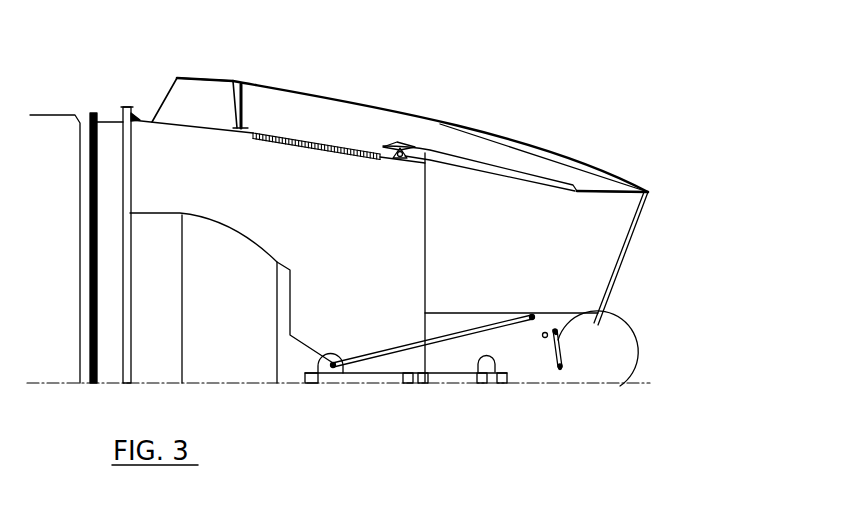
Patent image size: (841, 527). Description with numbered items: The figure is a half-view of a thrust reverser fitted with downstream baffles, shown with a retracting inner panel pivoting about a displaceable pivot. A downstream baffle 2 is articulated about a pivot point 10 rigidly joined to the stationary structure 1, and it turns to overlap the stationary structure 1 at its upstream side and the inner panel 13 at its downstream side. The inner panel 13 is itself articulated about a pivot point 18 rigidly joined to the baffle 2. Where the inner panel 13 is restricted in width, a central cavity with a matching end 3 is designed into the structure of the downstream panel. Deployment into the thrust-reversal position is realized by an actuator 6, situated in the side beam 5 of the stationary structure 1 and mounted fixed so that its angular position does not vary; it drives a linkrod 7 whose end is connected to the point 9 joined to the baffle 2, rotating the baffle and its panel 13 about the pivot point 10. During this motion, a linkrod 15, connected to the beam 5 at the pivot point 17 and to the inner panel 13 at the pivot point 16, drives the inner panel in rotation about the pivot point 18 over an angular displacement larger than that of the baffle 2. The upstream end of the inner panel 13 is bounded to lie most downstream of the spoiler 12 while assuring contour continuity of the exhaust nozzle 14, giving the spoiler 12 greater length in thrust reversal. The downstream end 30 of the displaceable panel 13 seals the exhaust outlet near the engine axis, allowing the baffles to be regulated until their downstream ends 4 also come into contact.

The stationary structure 1 is at (202, 92).
The downstream baffle 2 is at (513, 144).
The matching end 3 is at (322, 100).
The downstream end 4 is at (639, 231).
The side beam 5 is at (611, 369).
The actuator 6 is at (370, 372).
The linkrod 7 is at (453, 337).
The point 9 is at (532, 320).
The pivot point 10 is at (560, 368).
The spoiler 12 is at (244, 107).
The inner panel 13 is at (425, 153).
The exhaust nozzle 14 is at (518, 181).
The linkrod 15 is at (560, 338).
The pivot point 16 is at (556, 330).
The pivot point 17 is at (562, 365).
The pivot point 18 is at (545, 338).
The downstream end 30 is at (619, 282).